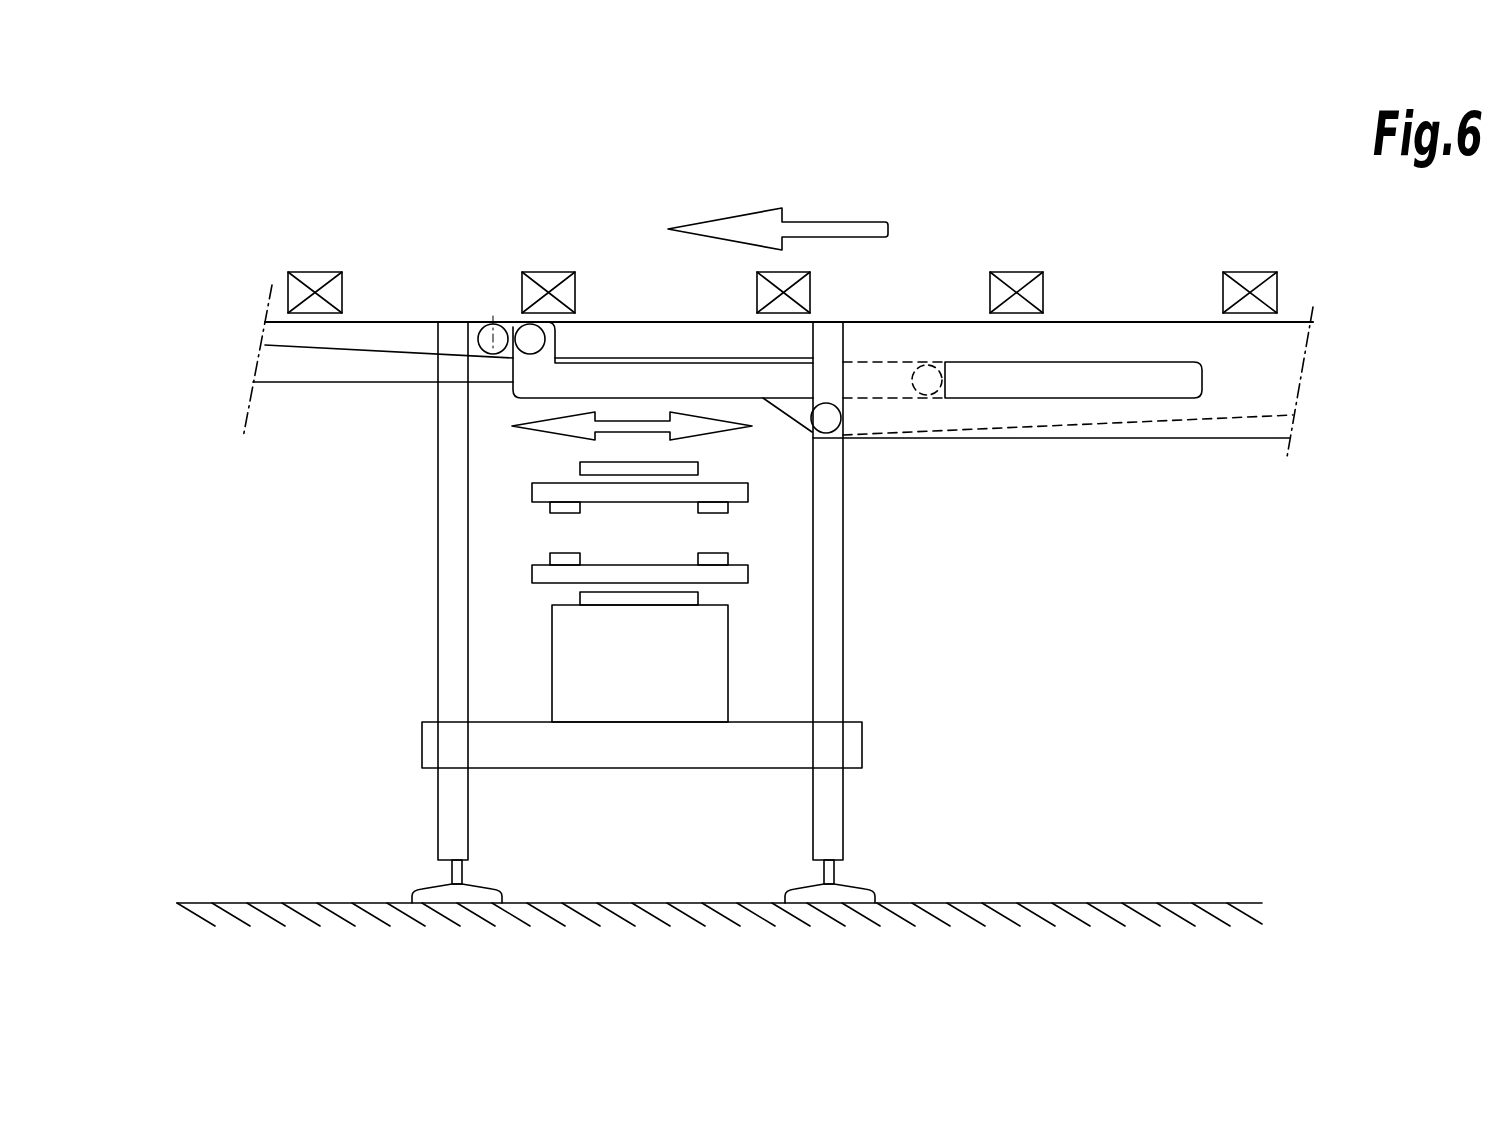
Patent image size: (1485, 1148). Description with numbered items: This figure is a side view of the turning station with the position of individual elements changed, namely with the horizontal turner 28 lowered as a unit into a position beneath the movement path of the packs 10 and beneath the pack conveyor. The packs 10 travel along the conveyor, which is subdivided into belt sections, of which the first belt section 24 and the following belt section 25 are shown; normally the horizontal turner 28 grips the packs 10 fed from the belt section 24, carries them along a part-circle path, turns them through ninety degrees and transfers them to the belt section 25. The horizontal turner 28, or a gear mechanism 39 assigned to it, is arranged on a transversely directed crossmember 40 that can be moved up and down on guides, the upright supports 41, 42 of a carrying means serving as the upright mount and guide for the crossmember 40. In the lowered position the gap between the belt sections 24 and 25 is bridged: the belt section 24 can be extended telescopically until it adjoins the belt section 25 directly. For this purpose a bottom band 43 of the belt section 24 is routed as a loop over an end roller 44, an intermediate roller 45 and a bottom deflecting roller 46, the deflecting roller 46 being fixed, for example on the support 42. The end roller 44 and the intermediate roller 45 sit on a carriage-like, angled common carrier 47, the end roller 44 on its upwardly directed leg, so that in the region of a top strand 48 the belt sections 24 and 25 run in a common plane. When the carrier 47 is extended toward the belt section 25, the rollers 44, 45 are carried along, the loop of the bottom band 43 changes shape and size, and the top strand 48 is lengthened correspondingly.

The pack 10 is at (1298, 280).
The first belt section 24 is at (1150, 292).
The belt section 25 is at (402, 283).
The horizontal turner 28 is at (497, 536).
The gear mechanism 39 is at (702, 680).
The crossmember 40 is at (719, 760).
The upright support 41 is at (438, 618).
The upright support 42 is at (828, 548).
The bottom band 43 is at (638, 357).
The end roller 44 is at (530, 337).
The intermediate roller 45 is at (927, 378).
The deflecting roller 46 is at (840, 420).
The carrier 47 is at (750, 378).
The top strand 48 is at (1075, 318).